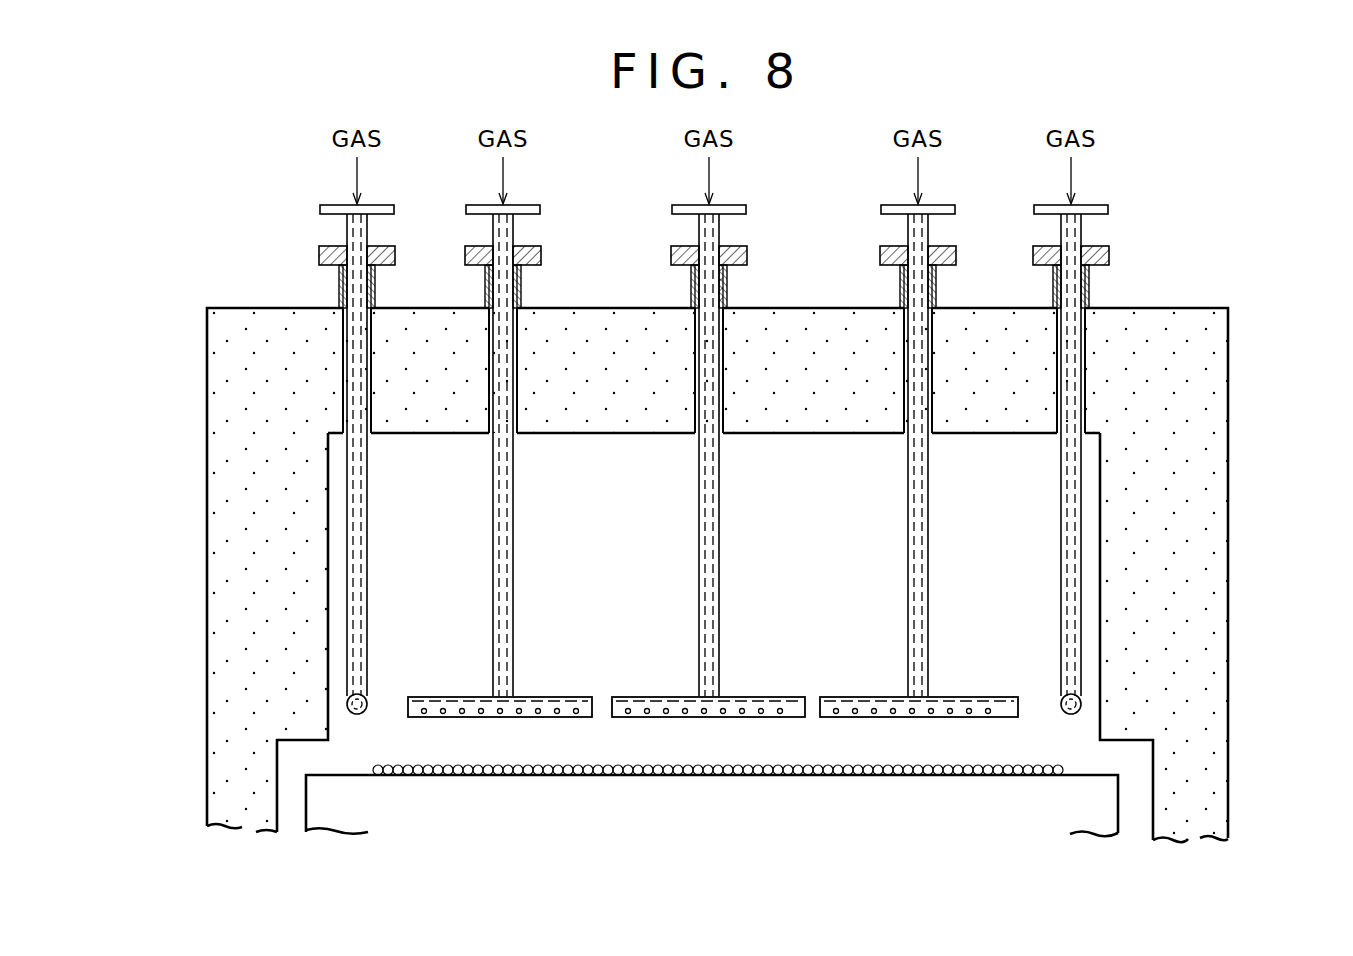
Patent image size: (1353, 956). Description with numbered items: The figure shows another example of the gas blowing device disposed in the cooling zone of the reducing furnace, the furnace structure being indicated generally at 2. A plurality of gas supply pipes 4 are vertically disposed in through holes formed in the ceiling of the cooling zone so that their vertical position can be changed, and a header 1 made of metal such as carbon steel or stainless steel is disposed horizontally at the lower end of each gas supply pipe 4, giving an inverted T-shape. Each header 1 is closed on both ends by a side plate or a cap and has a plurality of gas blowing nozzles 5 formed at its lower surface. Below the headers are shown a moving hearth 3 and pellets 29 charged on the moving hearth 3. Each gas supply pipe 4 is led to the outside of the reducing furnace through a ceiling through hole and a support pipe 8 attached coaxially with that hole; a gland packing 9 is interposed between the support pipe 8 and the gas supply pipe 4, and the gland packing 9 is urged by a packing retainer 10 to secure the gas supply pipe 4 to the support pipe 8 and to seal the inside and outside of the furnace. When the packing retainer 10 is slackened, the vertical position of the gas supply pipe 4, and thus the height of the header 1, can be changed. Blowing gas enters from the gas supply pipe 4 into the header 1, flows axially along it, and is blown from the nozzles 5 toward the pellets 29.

The header 1 is at (367, 699).
The furnace wall 2 is at (1245, 430).
The moving hearth 3 is at (343, 812).
The gas supply pipe 4 is at (699, 223).
The gas blowing nozzle 5 is at (512, 718).
The support pipe 8 is at (728, 297).
The gland packing 9 is at (728, 278).
The packing retainer 10 is at (672, 250).
The pellets 29 is at (1038, 772).